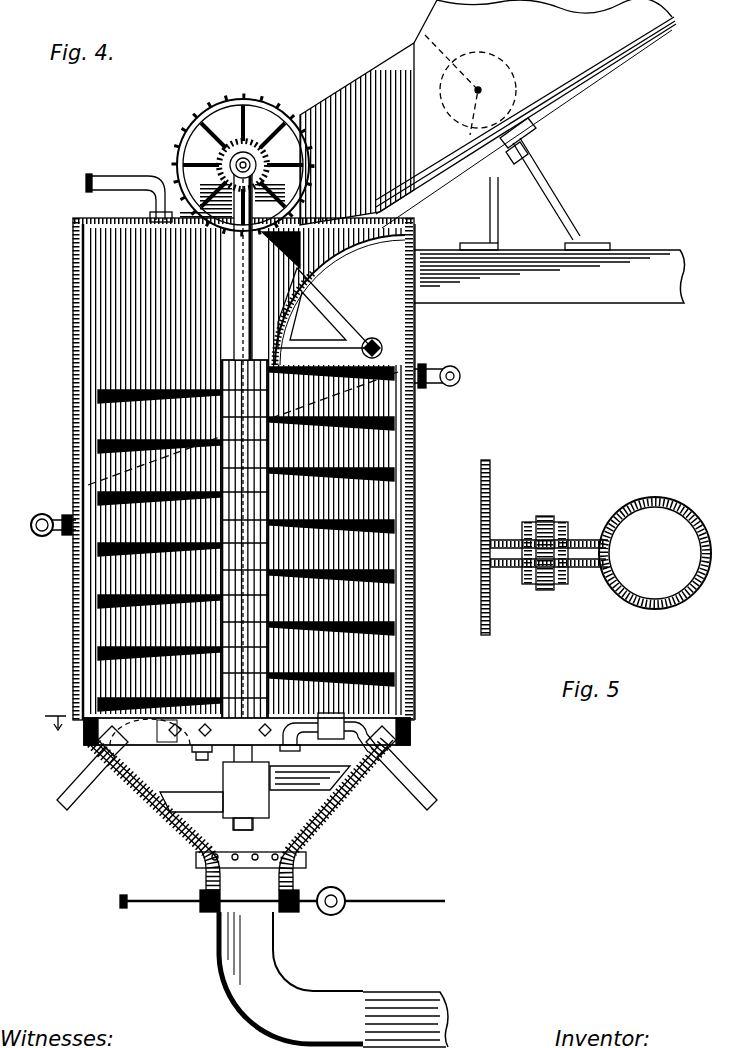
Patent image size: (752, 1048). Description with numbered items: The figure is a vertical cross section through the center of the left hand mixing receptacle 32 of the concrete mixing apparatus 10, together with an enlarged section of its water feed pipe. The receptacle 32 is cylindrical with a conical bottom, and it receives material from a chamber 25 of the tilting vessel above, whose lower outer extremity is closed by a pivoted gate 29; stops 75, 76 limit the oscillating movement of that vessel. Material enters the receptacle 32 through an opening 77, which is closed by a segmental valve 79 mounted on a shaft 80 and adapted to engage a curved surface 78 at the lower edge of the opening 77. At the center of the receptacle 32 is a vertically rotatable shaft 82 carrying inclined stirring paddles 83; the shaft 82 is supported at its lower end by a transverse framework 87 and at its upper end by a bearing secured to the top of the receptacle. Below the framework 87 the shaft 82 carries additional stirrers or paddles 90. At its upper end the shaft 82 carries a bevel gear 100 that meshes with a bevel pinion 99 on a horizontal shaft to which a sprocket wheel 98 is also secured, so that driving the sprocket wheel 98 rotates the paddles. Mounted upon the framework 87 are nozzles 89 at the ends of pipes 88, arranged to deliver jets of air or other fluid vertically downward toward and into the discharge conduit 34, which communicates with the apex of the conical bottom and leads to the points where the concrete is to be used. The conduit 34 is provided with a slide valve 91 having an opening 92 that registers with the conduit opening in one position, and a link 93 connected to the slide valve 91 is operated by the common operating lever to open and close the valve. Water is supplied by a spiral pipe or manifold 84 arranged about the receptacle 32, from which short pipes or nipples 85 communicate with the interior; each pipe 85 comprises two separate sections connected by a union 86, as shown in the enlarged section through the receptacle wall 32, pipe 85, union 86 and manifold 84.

In FIG. 4, the apparatus 10 is at (44, 716).
In FIG. 4, the chamber 25 is at (543, 67).
In FIG. 4, the gate 29 is at (425, 180).
In FIG. 4, the mixing receptacle 32 is at (73, 434).
In FIG. 5, the mixing receptacle 32 is at (492, 494).
In FIG. 4, the discharge conduit 34 is at (392, 996).
In FIG. 4, the stop 75 is at (536, 130).
In FIG. 4, the stop 76 is at (530, 152).
In FIG. 4, the opening 77 is at (357, 134).
In FIG. 4, the curved surface 78 is at (357, 246).
In FIG. 4, the segmental valve 79 is at (283, 300).
In FIG. 4, the shaft 80 is at (382, 346).
In FIG. 4, the vertically rotatable shaft 82 is at (233, 282).
In FIG. 4, the inclined stirring paddles 83 is at (166, 392).
In FIG. 4, the spiral pipe or manifold 84 is at (40, 514).
In FIG. 5, the spiral pipe or manifold 84 is at (655, 553).
In FIG. 4, the short pipe or nipple 85 is at (70, 542).
In FIG. 5, the short pipe or nipple 85 is at (590, 570).
In FIG. 5, the union 86 is at (530, 586).
In FIG. 4, the transverse framework 87 is at (282, 735).
In FIG. 4, the pipe 88 is at (72, 788).
In FIG. 4, the nozzle 89 is at (198, 758).
In FIG. 4, the stirrers or paddles 90 is at (168, 810).
In FIG. 4, the slide valve 91 is at (126, 908).
In FIG. 4, the opening 92 is at (176, 904).
In FIG. 4, the link 93 is at (388, 904).
In FIG. 4, the sprocket wheel 98 is at (252, 102).
In FIG. 4, the bevel pinion 99 is at (223, 155).
In FIG. 4, the bevel gear 100 is at (202, 180).